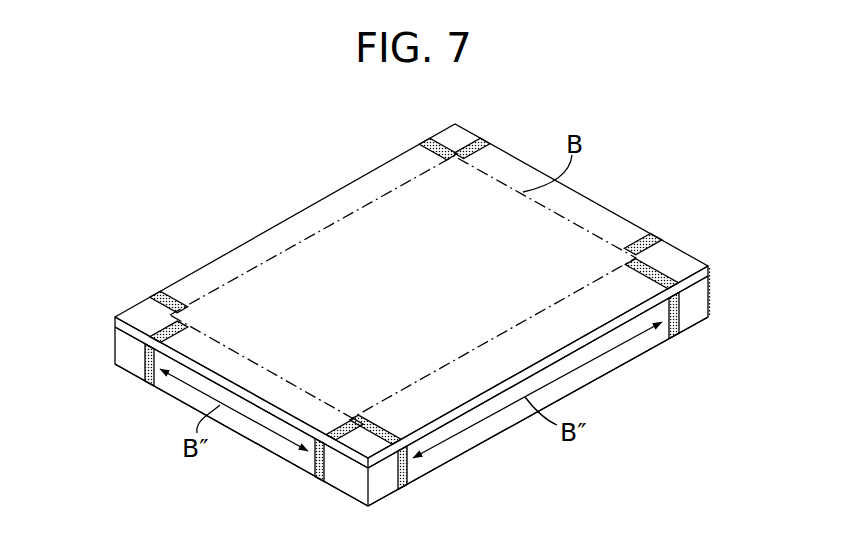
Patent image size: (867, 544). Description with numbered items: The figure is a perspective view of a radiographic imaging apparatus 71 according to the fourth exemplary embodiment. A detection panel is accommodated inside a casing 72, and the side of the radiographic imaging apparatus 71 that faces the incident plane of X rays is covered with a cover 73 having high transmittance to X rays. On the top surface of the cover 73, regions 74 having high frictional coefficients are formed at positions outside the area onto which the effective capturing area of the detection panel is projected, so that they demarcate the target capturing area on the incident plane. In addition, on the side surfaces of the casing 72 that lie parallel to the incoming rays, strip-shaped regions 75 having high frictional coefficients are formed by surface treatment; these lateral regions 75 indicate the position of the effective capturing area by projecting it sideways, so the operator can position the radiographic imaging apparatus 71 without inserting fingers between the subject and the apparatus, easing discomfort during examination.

The radiographic imaging apparatus 71 is at (684, 221).
The casing 72 is at (588, 372).
The cover 73 is at (618, 322).
The regions having high frictional coefficients 74 is at (150, 297).
The strip-shaped regions having high frictional coefficients 75 is at (318, 477).